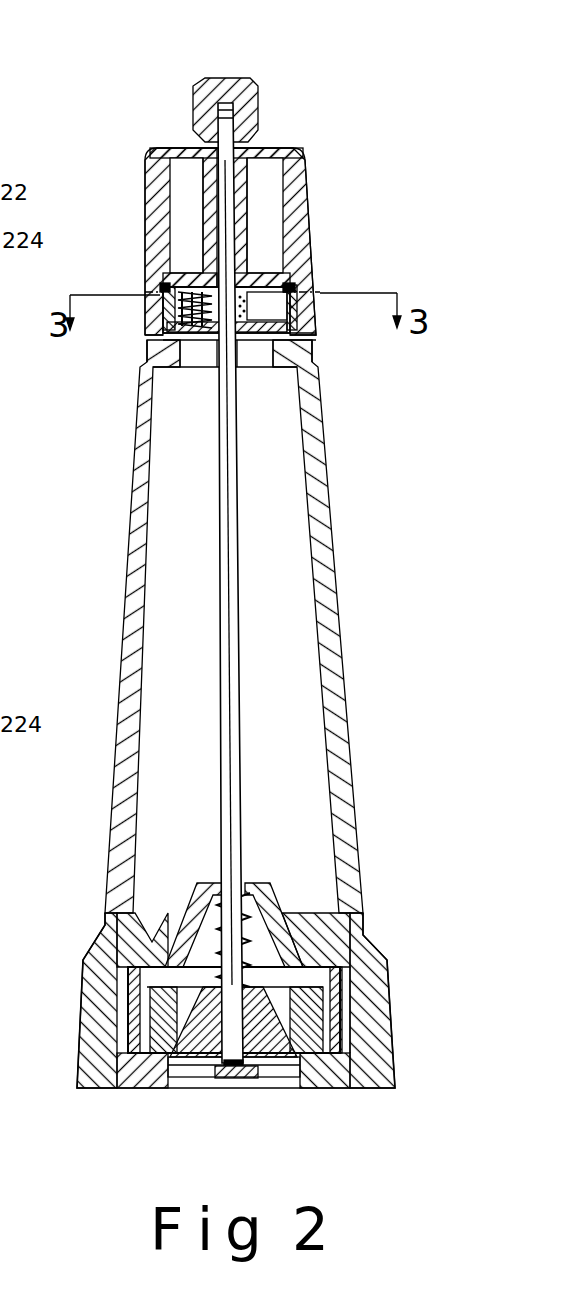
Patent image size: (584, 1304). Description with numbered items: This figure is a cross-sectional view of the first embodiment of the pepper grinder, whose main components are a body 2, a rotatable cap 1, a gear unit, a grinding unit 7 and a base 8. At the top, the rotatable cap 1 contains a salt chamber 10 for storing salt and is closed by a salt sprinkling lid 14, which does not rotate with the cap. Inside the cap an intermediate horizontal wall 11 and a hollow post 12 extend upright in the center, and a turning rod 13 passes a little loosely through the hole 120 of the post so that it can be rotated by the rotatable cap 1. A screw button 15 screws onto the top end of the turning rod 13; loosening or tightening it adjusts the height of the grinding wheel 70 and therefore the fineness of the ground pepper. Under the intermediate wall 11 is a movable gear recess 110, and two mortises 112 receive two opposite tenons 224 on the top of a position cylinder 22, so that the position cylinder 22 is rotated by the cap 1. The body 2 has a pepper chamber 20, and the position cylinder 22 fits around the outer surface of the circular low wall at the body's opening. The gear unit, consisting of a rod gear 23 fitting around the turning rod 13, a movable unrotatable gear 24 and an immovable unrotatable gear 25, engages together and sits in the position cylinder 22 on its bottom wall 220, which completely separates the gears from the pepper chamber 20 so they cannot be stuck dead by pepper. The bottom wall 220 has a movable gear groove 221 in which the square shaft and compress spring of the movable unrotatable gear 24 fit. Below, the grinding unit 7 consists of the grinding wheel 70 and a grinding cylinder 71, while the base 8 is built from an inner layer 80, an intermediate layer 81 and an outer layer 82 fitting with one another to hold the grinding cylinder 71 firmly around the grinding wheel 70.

The rotatable cap 1 is at (316, 308).
The body 2 is at (123, 573).
The grinding unit 7 is at (215, 1078).
The base 8 is at (340, 928).
The salt chamber 10 is at (180, 198).
The intermediate horizontal wall 11 is at (197, 277).
The hollow post 12 is at (147, 158).
The turning rod 13 is at (237, 482).
The salt sprinkling lid 14 is at (278, 150).
The screw button 15 is at (233, 80).
The pepper chamber 20 is at (295, 608).
The position cylinder 22 is at (143, 345).
The rod gear 23 is at (303, 338).
The movable unrotatable gear 24 is at (181, 363).
The immovable unrotatable gear 25 is at (163, 330).
The grinding wheel 70 is at (188, 1058).
The grinding cylinder 71 is at (310, 1007).
The inner layer 80 is at (128, 1003).
The intermediate layer 81 is at (327, 1077).
The outer layer 82 is at (352, 1027).
The movable gear recess 110 is at (245, 278).
The mortises 112 is at (163, 284).
The hole 120 is at (295, 172).
The bottom wall 220 is at (294, 348).
The movable gear groove 221 is at (147, 353).
The tenons 224 is at (158, 289).